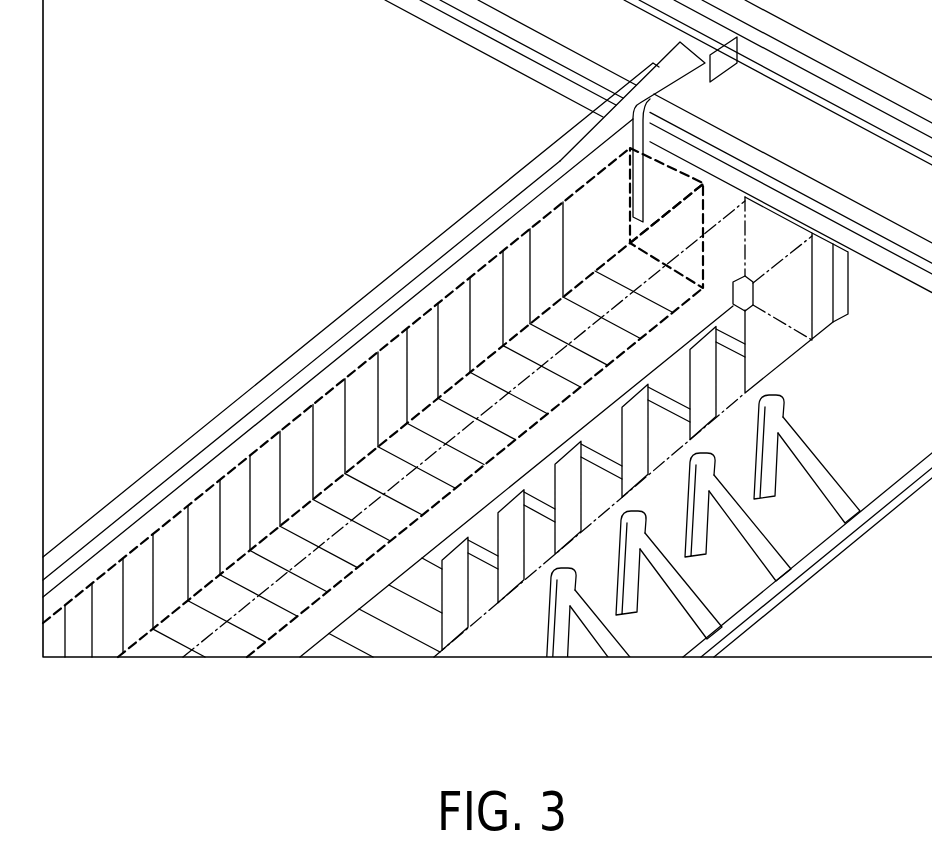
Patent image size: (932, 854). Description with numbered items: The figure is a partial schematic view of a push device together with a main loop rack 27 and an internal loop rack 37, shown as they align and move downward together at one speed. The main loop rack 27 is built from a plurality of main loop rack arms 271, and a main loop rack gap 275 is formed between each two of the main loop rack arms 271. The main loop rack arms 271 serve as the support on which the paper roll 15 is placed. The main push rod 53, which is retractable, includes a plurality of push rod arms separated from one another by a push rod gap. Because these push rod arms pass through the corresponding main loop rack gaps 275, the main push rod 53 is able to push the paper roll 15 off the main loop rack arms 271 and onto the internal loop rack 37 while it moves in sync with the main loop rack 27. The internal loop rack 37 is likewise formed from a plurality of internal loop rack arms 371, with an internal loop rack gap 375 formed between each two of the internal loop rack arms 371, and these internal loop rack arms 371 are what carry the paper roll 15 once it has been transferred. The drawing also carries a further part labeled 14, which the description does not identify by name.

The cross members 14 is at (658, 146).
The paper roll 15 is at (590, 200).
The main loop rack 27 is at (843, 267).
The internal loop rack 37 is at (380, 283).
The internal loop rack arms 371 is at (330, 370).
The internal loop rack gap 375 is at (303, 427).
The main loop rack arms 271 is at (407, 627).
The main loop rack gaps 275 is at (473, 610).
The main push rod 53 is at (833, 547).